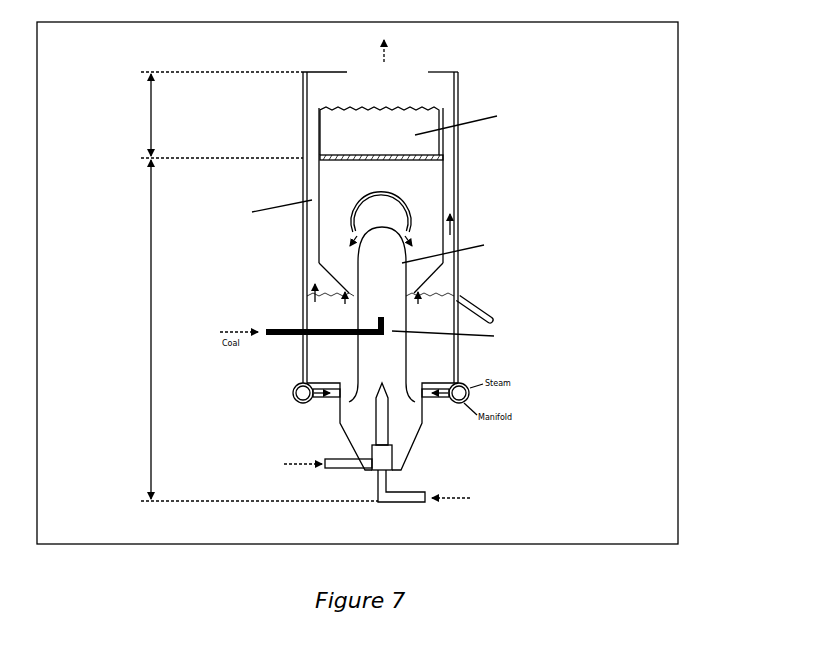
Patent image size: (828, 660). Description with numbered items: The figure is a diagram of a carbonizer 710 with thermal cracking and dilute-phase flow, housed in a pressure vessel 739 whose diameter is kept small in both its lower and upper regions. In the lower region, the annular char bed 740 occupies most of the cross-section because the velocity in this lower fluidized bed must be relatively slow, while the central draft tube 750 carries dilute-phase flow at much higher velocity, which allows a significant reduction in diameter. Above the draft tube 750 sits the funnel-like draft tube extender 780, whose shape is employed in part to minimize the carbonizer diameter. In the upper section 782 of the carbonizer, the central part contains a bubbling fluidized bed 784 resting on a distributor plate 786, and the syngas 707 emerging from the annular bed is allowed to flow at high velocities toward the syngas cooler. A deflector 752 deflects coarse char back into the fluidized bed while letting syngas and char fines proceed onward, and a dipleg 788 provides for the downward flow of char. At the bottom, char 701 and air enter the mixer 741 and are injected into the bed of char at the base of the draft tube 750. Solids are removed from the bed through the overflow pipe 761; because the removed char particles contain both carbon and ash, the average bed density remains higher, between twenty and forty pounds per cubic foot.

The char 701 is at (451, 486).
The syngas 707 is at (406, 63).
The carbonizer 710 is at (285, 330).
The pressure vessel 739 is at (458, 105).
The annular char bed 740 is at (303, 350).
The mixer 741 is at (372, 452).
The draft tube 750 is at (415, 370).
The deflector 752 is at (408, 205).
The overflow pipe 761 is at (500, 311).
The draft tube extender 780 is at (318, 232).
The upper section 782 is at (197, 115).
The bubbling fluidized bed 784 is at (469, 130).
The distributor plate 786 is at (330, 158).
The dipleg 788 is at (425, 294).